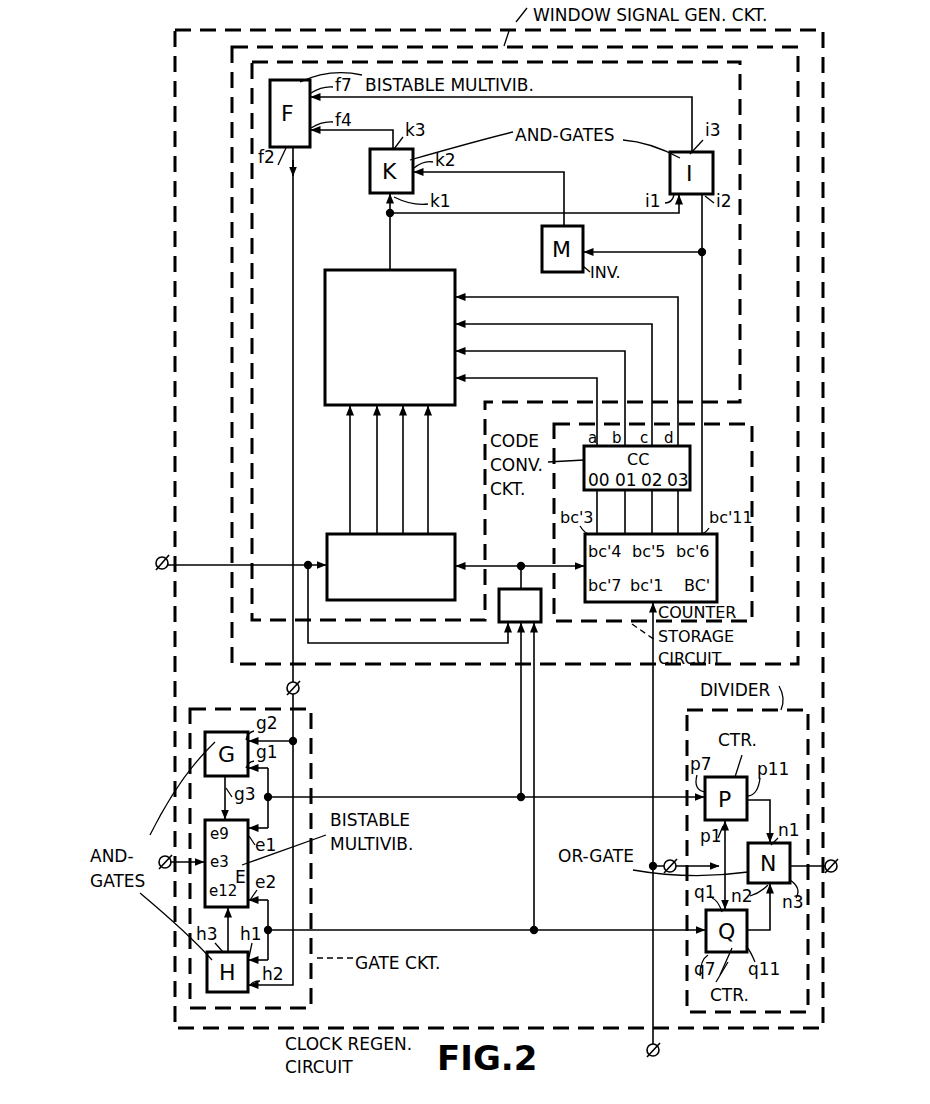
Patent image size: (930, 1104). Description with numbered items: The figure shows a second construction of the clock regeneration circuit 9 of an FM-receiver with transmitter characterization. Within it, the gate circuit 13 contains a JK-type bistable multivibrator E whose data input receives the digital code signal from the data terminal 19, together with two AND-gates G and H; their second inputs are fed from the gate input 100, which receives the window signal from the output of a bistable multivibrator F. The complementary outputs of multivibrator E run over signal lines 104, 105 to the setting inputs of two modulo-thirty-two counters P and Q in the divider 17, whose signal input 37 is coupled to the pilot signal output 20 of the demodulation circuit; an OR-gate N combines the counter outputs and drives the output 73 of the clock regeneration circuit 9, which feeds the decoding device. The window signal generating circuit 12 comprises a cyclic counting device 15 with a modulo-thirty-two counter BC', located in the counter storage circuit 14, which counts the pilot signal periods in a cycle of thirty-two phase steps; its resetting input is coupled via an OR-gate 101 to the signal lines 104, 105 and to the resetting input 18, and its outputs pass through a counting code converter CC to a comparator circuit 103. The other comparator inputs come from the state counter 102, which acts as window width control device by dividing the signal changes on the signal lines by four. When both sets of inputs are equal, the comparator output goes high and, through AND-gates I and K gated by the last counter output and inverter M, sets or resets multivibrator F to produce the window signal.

The clock regeneration circuit 9 is at (210, 1028).
The window signal generating circuit 12 is at (232, 386).
The gate circuit 13 is at (313, 968).
The counter storage circuit 14 is at (752, 450).
The cyclic counting device 15 is at (745, 152).
The divider 17 is at (687, 965).
The resetting input 18 is at (239, 550).
The data terminal 19 is at (180, 850).
The pilot signal output 20 is at (661, 1050).
The signal input 37 is at (670, 860).
The output 73 is at (833, 860).
The gate input 100 is at (300, 688).
The OR-gate 101 is at (541, 621).
The state counter 102 is at (327, 542).
The comparator circuit 103 is at (325, 372).
The signal line 104 is at (391, 797).
The signal line 105 is at (397, 929).